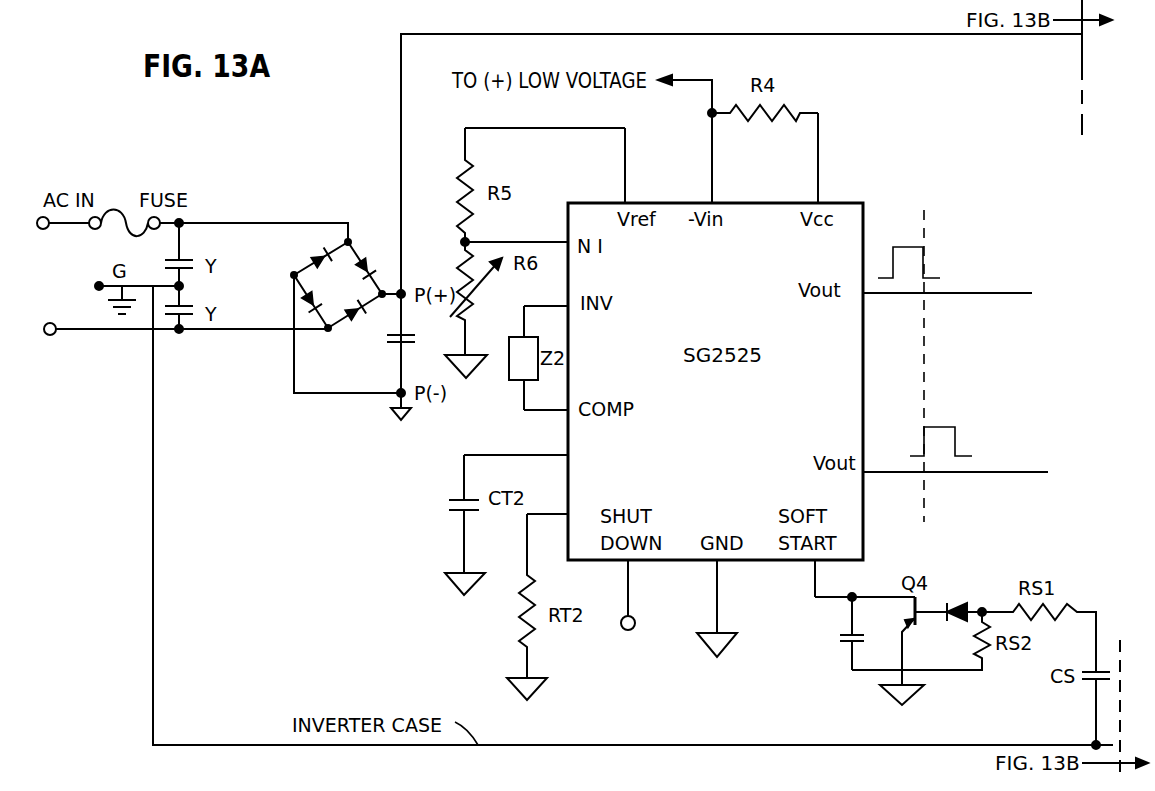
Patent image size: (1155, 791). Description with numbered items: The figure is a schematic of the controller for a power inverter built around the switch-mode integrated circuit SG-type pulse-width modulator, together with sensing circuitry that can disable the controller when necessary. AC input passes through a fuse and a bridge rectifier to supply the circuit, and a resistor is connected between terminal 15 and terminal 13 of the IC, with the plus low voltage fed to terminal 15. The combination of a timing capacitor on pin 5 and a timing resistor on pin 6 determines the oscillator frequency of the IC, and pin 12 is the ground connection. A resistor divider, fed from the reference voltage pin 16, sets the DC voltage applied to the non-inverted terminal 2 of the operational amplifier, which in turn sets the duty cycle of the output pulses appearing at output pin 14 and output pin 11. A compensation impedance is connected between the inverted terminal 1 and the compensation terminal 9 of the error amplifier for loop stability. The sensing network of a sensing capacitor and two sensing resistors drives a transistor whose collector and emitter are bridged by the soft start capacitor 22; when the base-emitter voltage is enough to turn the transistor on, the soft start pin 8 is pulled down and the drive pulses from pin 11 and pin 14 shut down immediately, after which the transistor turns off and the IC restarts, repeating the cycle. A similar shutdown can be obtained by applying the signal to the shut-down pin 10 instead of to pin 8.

The soft start capacitor 22 is at (850, 636).
The Vref pin 16 is at (611, 165).
The terminal 15 is at (700, 158).
The terminal 13 is at (804, 158).
The non-inverted terminal 2 is at (516, 230).
The inverted terminal 1 is at (546, 292).
The compensation terminal 9 is at (546, 396).
The timing capacitor pin 5 is at (516, 443).
The timing resistor pin 6 is at (547, 501).
The shut-down pin 10 is at (615, 595).
The ground pin 12 is at (724, 608).
The soft start pin 8 is at (805, 578).
The output pulse pin 14 is at (947, 304).
The output pulse pin 11 is at (955, 485).